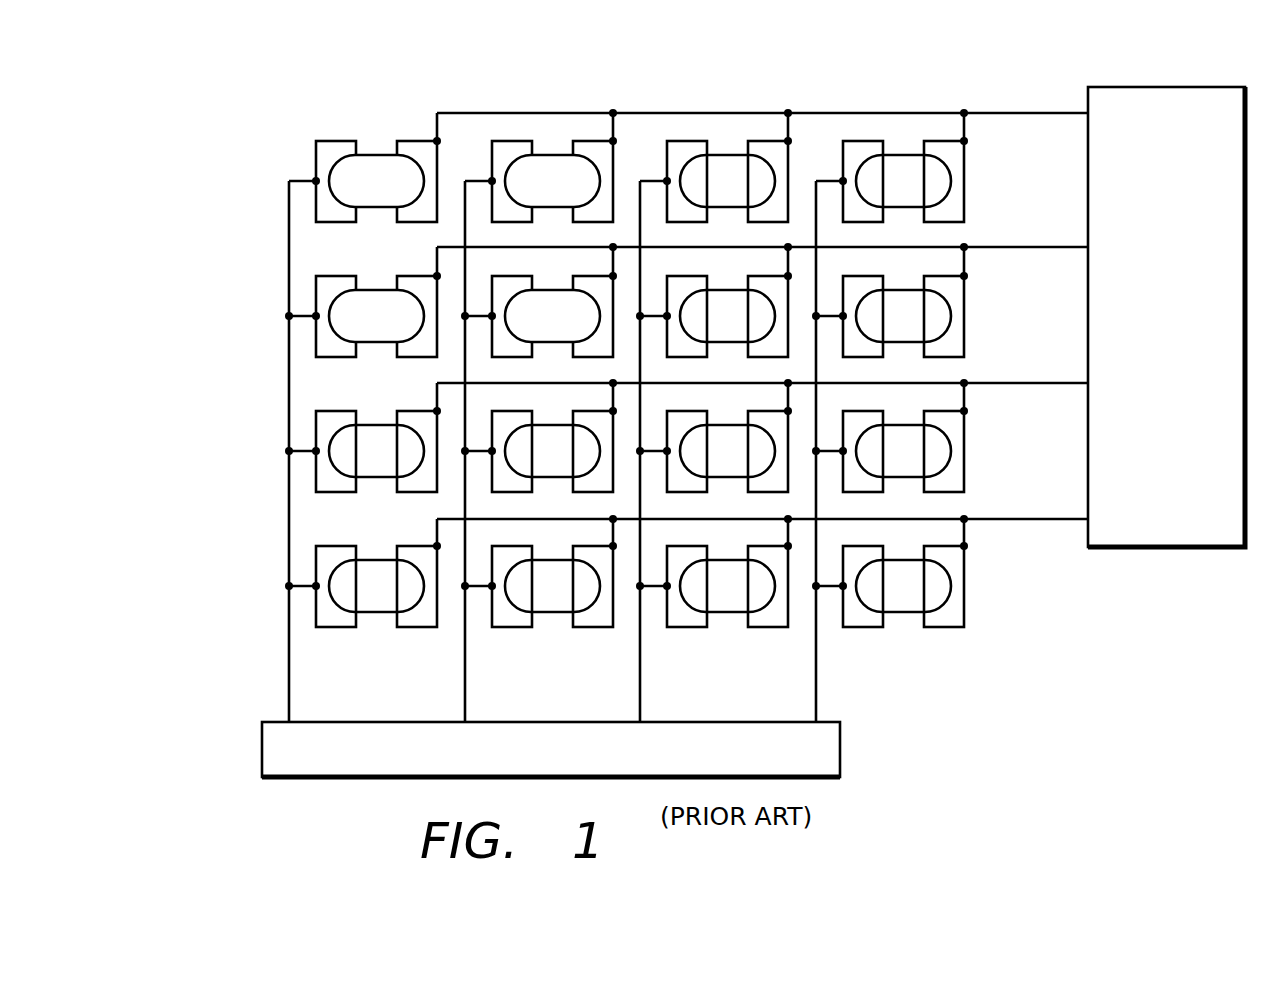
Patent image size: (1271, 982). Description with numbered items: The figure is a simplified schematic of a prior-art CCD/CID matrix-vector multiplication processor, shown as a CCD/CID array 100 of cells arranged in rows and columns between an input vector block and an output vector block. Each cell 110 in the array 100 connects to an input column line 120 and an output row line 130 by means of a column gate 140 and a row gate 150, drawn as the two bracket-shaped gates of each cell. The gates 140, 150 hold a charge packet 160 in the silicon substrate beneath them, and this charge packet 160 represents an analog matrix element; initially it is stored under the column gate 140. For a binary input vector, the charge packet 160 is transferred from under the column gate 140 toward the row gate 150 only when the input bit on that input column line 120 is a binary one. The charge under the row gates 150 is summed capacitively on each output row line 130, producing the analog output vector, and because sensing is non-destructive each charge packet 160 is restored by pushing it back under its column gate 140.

The CCD/CID array 100 is at (265, 126).
The cell 110 is at (990, 671).
The input column line 120 is at (288, 524).
The output row line 130 is at (841, 113).
The column gate 140 is at (863, 630).
The row gate 150 is at (945, 630).
The charge packet 160 is at (944, 438).